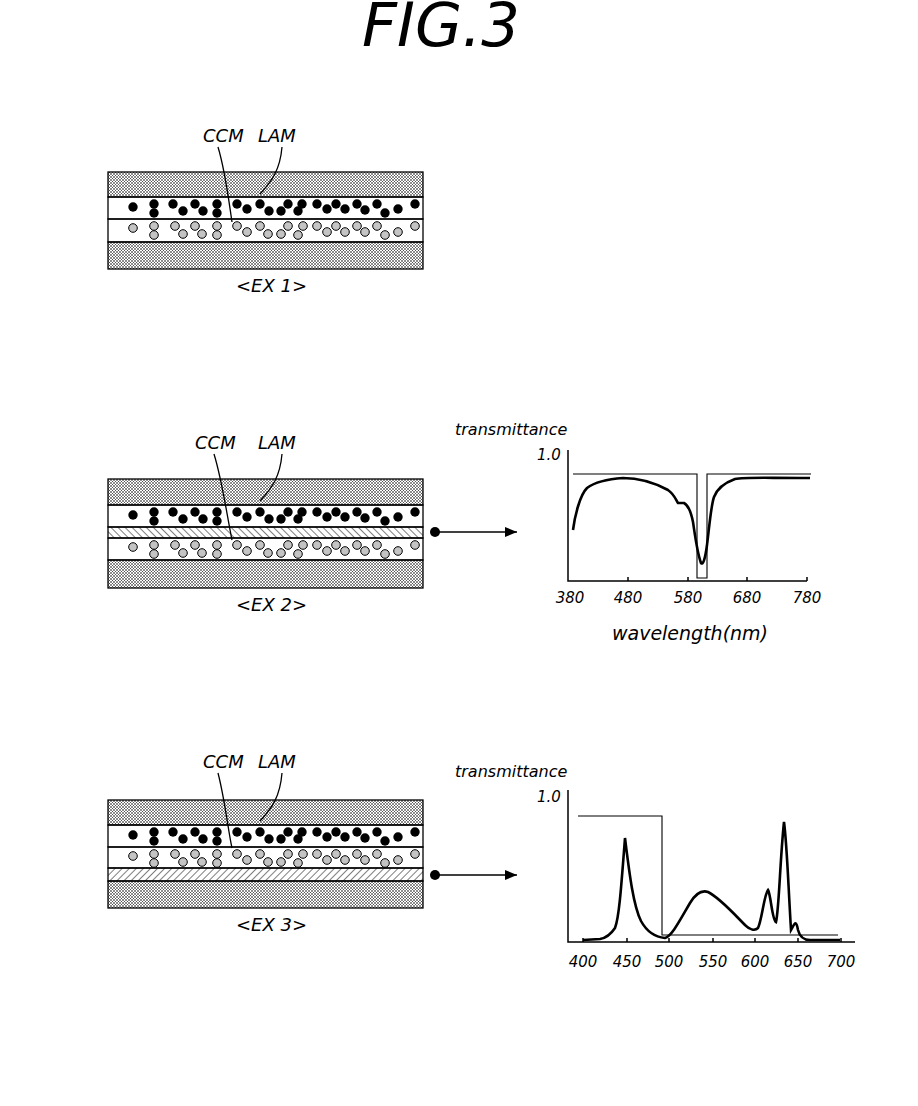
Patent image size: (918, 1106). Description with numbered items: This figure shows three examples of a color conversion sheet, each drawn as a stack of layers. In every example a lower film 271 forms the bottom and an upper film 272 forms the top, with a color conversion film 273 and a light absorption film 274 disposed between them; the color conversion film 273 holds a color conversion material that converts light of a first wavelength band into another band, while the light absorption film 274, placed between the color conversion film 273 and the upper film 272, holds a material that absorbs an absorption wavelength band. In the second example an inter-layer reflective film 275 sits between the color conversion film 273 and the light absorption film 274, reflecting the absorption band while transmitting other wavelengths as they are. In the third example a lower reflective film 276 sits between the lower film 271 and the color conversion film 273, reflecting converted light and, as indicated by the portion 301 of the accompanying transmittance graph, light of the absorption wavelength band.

The lower film 271 is at (108, 263).
The upper film 272 is at (108, 187).
The color conversion film 273 is at (108, 239).
The light absorption film 274 is at (108, 213).
The inter-layer reflective film 275 is at (108, 536).
The lower reflective film 276 is at (108, 877).
The portion indicating reflected absorption-band light 301 is at (746, 912).